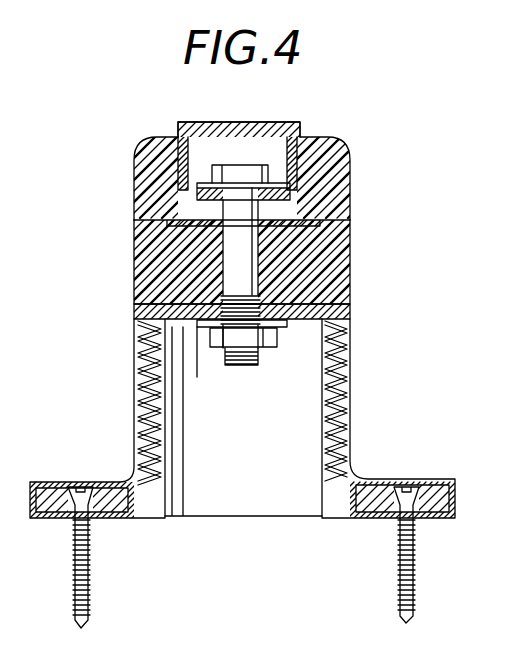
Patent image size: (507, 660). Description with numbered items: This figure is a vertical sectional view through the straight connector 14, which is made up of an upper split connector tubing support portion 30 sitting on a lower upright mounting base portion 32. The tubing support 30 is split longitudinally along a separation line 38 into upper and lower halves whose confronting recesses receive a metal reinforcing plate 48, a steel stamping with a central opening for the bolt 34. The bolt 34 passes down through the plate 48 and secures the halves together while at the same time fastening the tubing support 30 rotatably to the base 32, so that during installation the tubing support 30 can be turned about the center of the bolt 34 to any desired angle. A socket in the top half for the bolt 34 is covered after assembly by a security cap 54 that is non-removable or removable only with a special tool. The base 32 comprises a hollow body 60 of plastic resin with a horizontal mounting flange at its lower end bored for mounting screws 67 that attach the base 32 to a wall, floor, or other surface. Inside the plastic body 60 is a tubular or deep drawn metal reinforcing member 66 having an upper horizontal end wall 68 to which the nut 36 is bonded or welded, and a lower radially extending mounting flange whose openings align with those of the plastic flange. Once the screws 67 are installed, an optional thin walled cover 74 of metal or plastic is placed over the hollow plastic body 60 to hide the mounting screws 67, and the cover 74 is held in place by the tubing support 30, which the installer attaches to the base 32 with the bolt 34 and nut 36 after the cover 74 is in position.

The straight connector 14 is at (375, 230).
The upper split connector tubing support portion 30 is at (137, 123).
The lower upright mounting base portion 32 is at (442, 310).
The bolt 34 is at (245, 259).
The nut 36 is at (270, 340).
The separation line 38 is at (350, 220).
The metal reinforcing plate 48 is at (177, 137).
The security cap 54 is at (272, 122).
The hollow body 60 is at (338, 360).
The metal reinforcing member 66 is at (322, 462).
The mounting screws 67 is at (395, 566).
The upper horizontal end wall 68 is at (306, 327).
The thin walled cover 74 is at (347, 417).